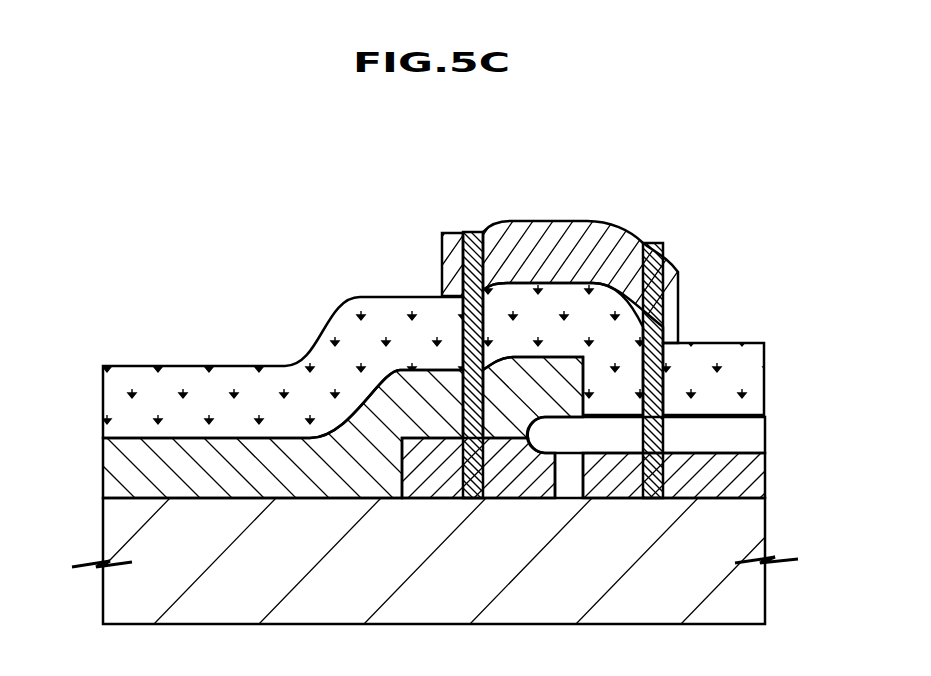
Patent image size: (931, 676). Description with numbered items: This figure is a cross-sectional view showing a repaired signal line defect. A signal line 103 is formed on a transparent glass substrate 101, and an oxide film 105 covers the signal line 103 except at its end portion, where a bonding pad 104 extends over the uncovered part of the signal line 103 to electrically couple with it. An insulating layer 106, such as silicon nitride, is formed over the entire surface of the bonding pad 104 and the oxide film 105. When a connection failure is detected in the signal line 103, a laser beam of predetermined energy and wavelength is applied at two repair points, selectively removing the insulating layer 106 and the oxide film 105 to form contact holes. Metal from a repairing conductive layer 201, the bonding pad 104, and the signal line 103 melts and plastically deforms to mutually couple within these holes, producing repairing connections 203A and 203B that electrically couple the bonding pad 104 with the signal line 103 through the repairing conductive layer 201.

The transparent glass substrate 101 is at (755, 521).
The signal line 103 is at (755, 470).
The bonding pad 104 is at (108, 473).
The oxide film 105 is at (755, 435).
The insulating layer 106 is at (108, 395).
The repairing conductive layer 201 is at (557, 242).
The repairing connection 203A is at (471, 230).
The repairing connection 203B is at (656, 250).